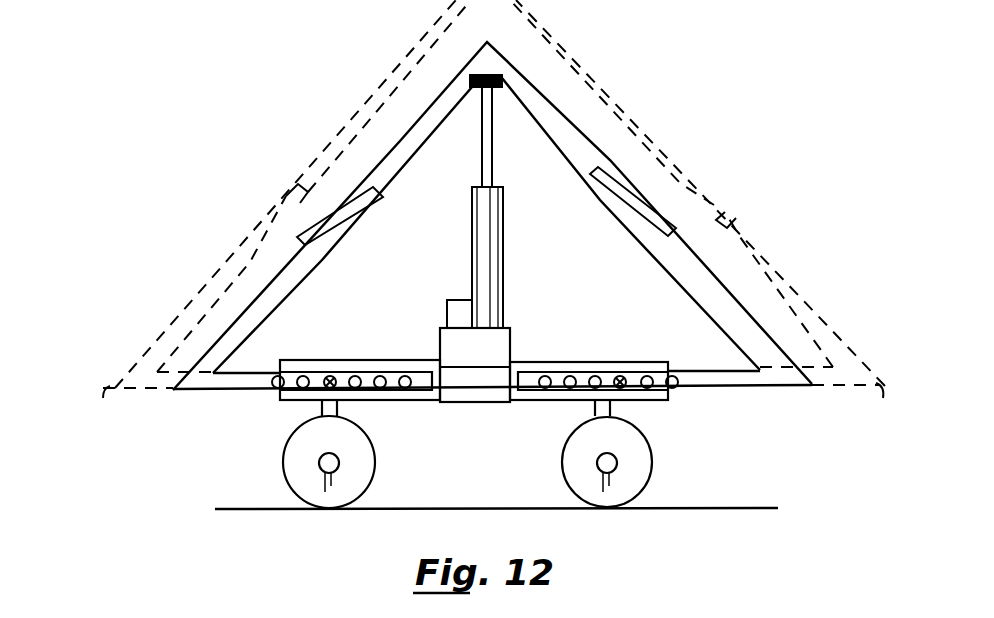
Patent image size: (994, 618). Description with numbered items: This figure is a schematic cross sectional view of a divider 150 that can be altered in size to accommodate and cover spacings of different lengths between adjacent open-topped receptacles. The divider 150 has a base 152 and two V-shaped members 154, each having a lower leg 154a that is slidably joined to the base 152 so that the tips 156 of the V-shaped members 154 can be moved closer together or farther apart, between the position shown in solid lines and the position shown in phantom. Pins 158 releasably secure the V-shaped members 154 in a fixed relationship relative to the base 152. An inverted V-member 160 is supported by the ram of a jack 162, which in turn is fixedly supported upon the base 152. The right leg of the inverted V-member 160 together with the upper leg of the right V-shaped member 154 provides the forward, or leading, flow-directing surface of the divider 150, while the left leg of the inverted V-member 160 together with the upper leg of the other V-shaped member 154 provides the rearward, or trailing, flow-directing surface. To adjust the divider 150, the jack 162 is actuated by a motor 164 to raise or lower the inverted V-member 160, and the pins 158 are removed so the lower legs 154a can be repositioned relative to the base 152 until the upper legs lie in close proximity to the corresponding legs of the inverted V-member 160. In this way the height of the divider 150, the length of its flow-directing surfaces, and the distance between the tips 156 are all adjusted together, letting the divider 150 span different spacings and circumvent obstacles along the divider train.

The divider 150 is at (712, 287).
The base 152 is at (475, 403).
The V-shaped member 154 is at (267, 293).
The lower leg 154a is at (228, 392).
The tip 156 is at (150, 398).
The pin 158 is at (330, 376).
The inverted V-member 160 is at (447, 82).
The jack 162 is at (488, 196).
The motor 164 is at (462, 306).